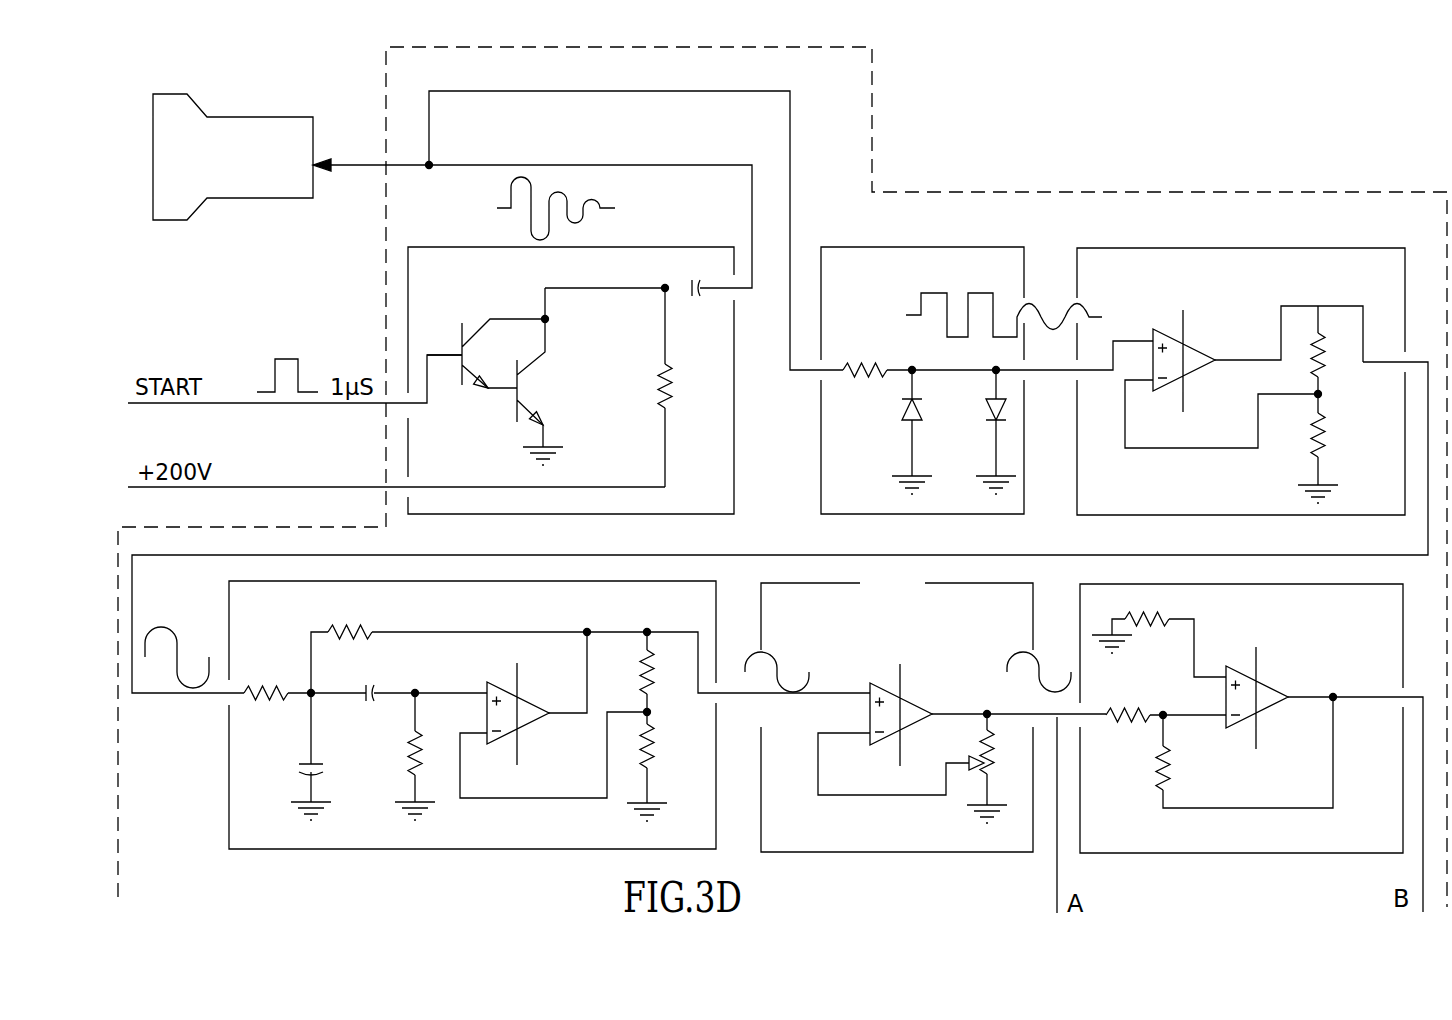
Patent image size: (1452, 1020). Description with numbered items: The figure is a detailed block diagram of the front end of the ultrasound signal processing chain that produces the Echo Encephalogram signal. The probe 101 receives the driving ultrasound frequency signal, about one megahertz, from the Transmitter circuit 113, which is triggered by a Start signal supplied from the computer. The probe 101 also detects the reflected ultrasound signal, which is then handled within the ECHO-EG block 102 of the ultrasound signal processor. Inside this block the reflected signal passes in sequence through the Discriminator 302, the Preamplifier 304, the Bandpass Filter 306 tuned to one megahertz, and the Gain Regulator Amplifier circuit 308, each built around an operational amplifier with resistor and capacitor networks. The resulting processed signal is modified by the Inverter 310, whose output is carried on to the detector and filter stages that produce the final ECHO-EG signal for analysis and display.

The probe 101 is at (226, 200).
The ECHO-EG block 102 is at (387, 87).
The Transmitter circuit 113 is at (435, 247).
The Discriminator 302 is at (914, 247).
The Preamplifier 304 is at (1140, 248).
The Bandpass Filter 306 is at (448, 849).
The Gain Regulator Amplifier circuit 308 is at (862, 852).
The Inverter 310 is at (1207, 853).